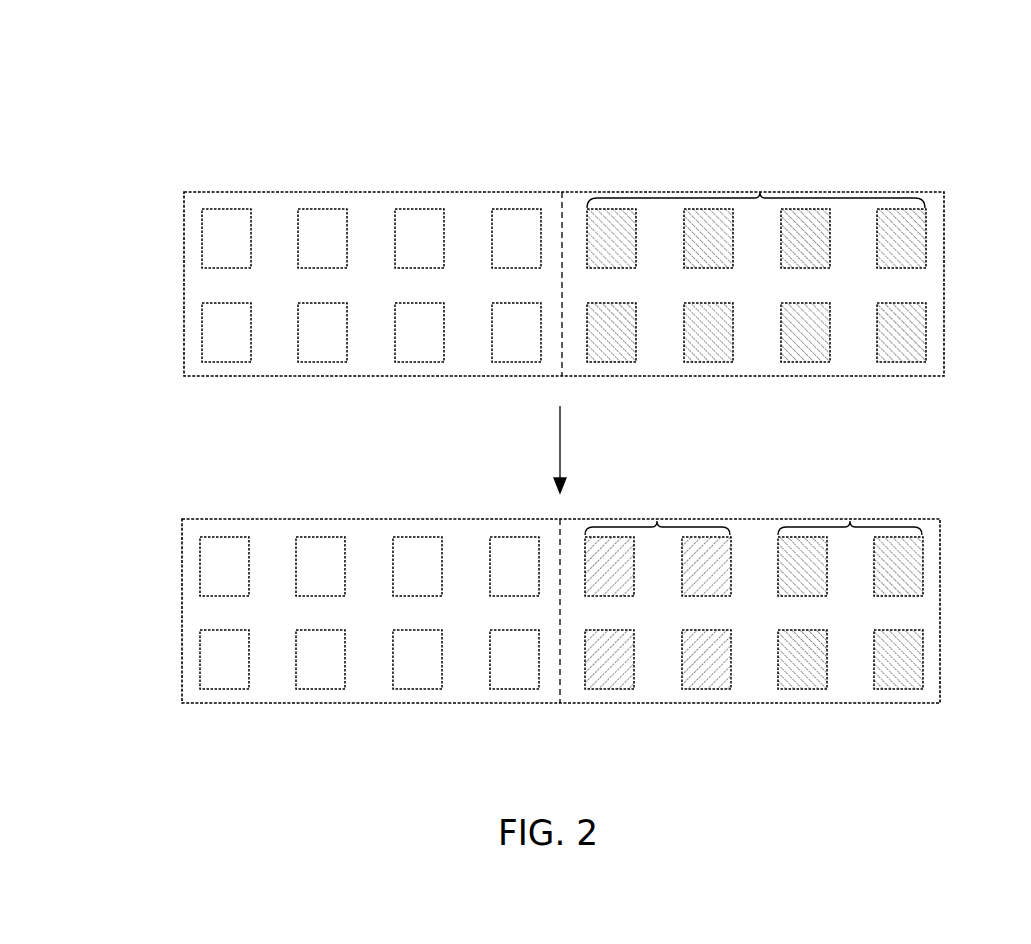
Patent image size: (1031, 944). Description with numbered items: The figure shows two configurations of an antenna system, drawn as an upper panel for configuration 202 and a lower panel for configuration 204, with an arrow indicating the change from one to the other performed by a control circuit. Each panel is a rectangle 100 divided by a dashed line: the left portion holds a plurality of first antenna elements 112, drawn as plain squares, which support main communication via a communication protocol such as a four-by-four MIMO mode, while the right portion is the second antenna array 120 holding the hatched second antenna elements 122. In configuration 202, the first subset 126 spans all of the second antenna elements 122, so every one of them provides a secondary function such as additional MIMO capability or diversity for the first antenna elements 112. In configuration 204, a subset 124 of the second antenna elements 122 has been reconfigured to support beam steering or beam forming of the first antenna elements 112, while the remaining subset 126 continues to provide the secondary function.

The configuration 202 is at (190, 101).
The configuration 204 is at (184, 473).
The wafer / substrate 100 is at (325, 450).
The first antenna element 112 is at (196, 287).
The second antenna array 120 is at (808, 449).
The second antenna elements 122 is at (931, 283).
The subset 124 is at (657, 522).
The first subset 126 is at (809, 415).